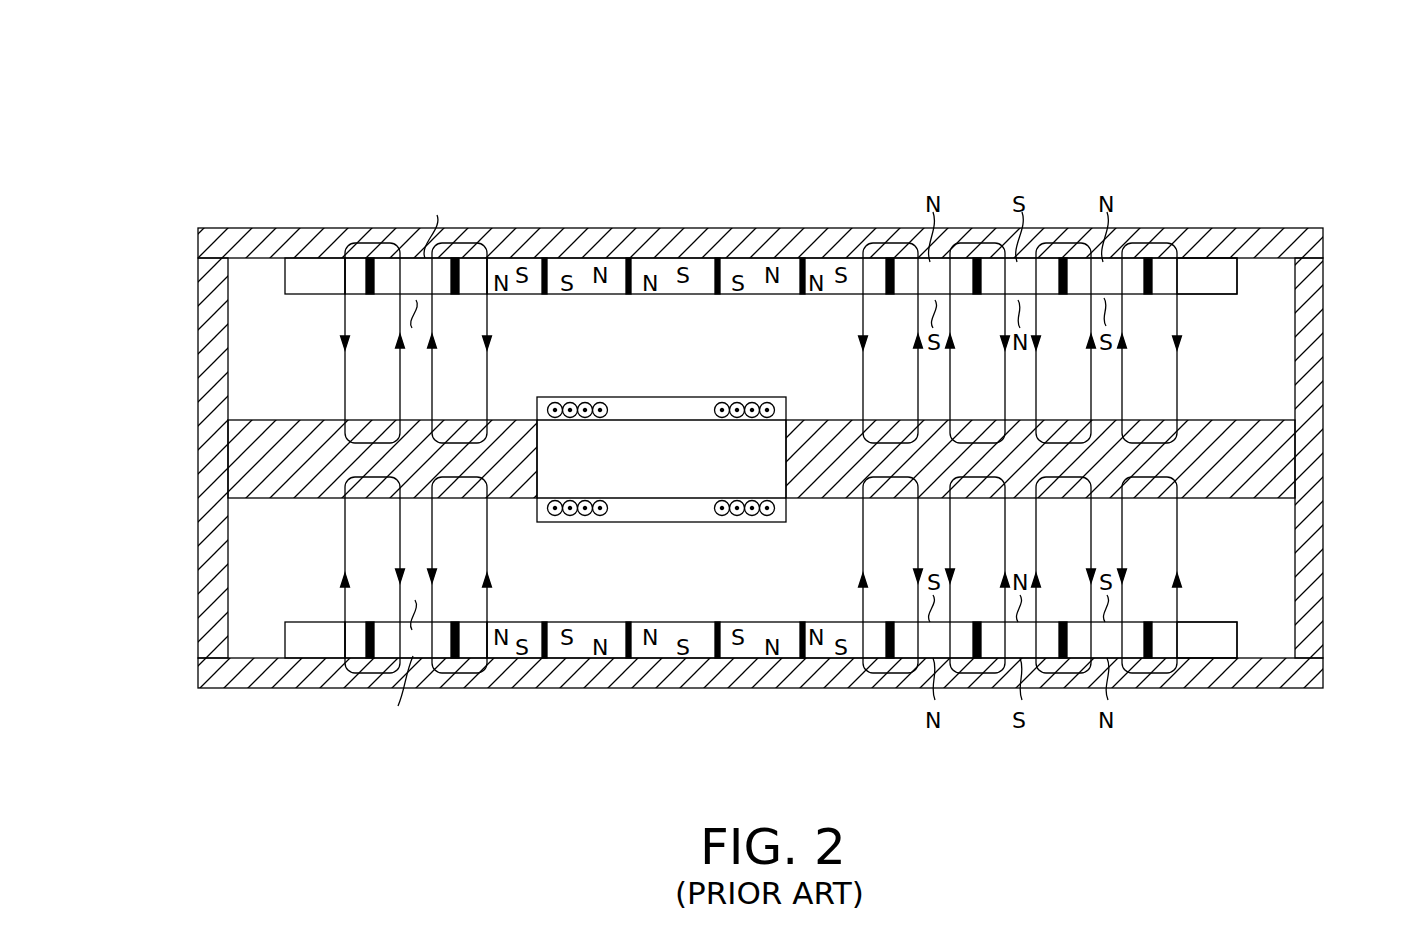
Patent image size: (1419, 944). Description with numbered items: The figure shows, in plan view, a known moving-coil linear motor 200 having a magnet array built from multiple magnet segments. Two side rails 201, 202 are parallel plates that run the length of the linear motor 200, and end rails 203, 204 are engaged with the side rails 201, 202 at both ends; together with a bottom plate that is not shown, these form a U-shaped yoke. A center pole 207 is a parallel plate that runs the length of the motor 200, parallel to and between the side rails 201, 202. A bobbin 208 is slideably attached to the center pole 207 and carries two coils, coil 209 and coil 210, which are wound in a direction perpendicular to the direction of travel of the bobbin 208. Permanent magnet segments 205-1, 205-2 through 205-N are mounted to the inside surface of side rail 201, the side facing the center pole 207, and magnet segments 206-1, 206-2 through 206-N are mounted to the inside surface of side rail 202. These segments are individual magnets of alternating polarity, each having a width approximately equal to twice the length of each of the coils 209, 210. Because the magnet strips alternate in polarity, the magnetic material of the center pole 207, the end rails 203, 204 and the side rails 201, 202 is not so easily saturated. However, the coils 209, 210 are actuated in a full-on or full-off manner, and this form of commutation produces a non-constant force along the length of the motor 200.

The linear motor 200 is at (1044, 150).
The side rail 201 is at (745, 228).
The side rail 202 is at (748, 690).
The end rail 203 is at (198, 460).
The end rail 204 is at (1325, 455).
The permanent magnet segment 205-1 is at (300, 296).
The permanent magnet segment 205-2 is at (417, 263).
The permanent magnet segment 205-N is at (1215, 298).
The magnet segment 206-1 is at (300, 622).
The magnet segment 206-2 is at (425, 662).
The magnet segment 206-N is at (1222, 620).
The center pole 207 is at (333, 418).
The bobbin 208 is at (680, 397).
The coil 209 is at (575, 500).
The coil 210 is at (742, 420).